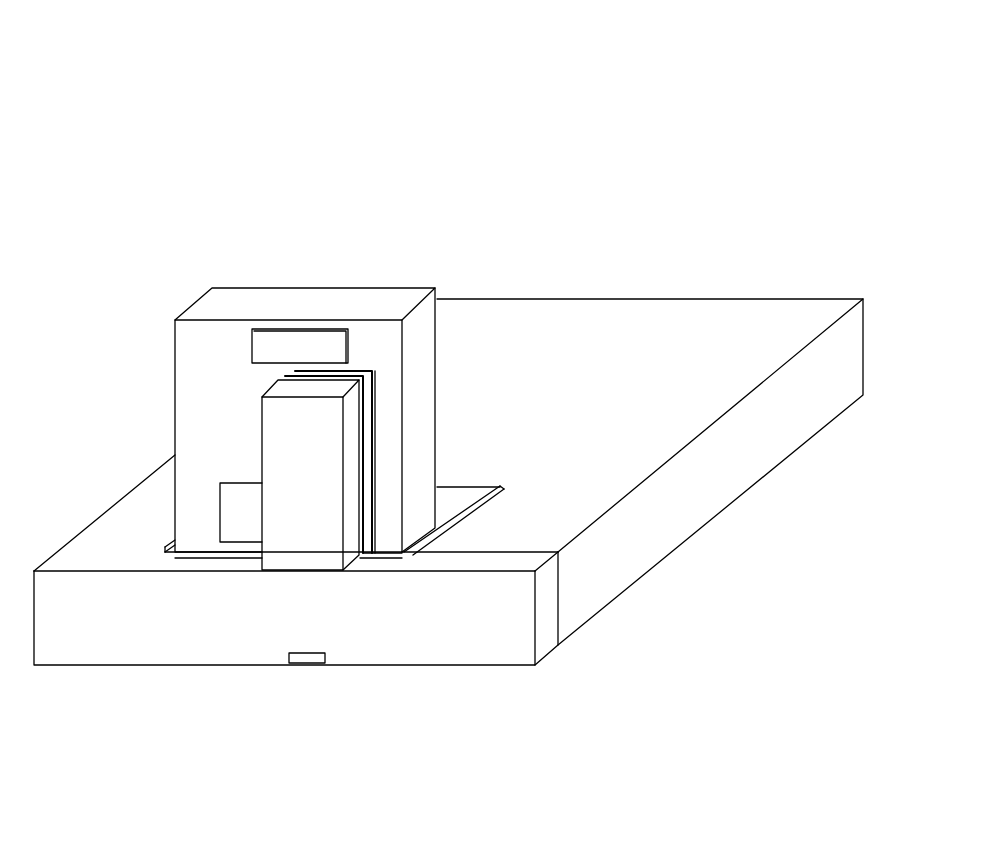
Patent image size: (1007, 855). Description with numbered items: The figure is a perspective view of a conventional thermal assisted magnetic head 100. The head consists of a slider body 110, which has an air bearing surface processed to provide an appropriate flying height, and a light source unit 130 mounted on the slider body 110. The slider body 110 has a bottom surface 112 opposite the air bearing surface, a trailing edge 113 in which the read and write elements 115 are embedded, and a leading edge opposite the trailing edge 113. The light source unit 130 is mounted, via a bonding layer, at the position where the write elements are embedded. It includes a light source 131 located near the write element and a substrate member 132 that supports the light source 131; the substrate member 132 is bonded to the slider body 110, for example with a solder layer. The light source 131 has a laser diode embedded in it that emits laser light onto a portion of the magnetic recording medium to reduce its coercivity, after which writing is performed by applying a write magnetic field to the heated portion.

The thermal assisted magnetic head 100 is at (165, 40).
The slider body 110 is at (700, 287).
The bottom surface 112 is at (497, 328).
The trailing edge 113 is at (153, 612).
The read and write elements 115 is at (302, 658).
The light source unit 130 is at (167, 343).
The light source 131 is at (272, 427).
The substrate member 132 is at (213, 302).